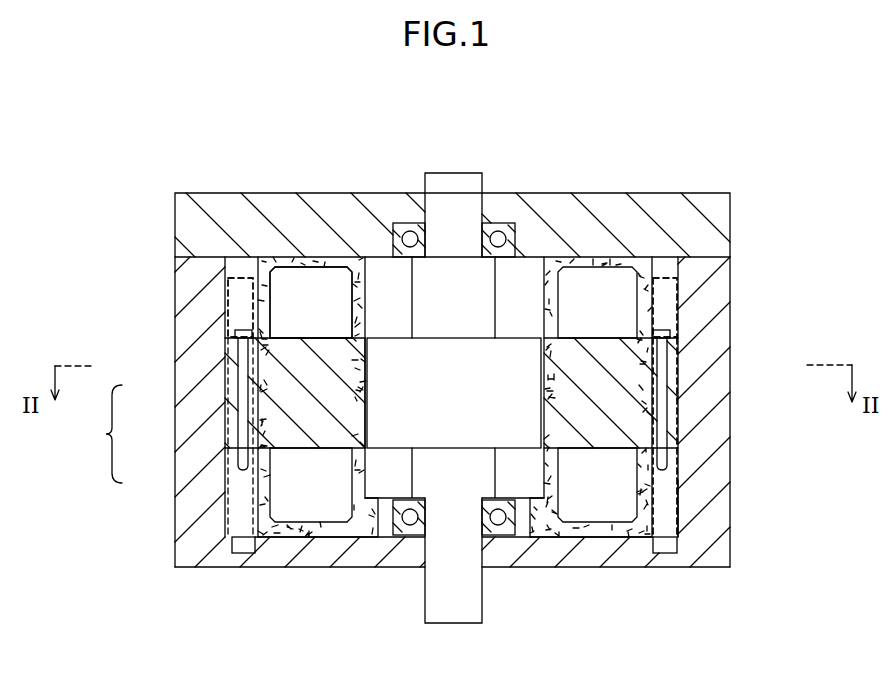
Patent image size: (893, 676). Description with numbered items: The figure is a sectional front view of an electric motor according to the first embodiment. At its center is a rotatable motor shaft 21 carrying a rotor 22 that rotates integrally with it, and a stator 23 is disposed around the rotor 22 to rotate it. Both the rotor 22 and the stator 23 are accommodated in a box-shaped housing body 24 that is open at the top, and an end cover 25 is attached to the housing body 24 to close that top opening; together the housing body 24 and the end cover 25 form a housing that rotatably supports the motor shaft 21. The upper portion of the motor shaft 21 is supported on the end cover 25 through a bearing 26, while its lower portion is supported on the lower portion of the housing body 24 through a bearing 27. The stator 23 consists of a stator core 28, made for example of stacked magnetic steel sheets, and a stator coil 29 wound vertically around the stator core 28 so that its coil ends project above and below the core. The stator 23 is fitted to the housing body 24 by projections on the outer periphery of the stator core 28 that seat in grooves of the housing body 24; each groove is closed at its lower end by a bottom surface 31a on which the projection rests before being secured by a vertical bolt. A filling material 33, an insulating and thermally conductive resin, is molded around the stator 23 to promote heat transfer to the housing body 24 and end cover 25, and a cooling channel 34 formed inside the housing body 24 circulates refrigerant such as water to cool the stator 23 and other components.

The motor shaft 21 is at (440, 172).
The rotor 22 is at (515, 337).
The stator 23 is at (97, 434).
The housing body 24 is at (730, 437).
The end cover 25 is at (355, 193).
The bearing 26 is at (500, 222).
The bearing 27 is at (503, 540).
The stator core 28 is at (300, 452).
The stator coil 29 is at (255, 395).
The bottom surface 31a is at (652, 450).
The filling material 33 is at (362, 537).
The cooling channel 34 is at (674, 496).